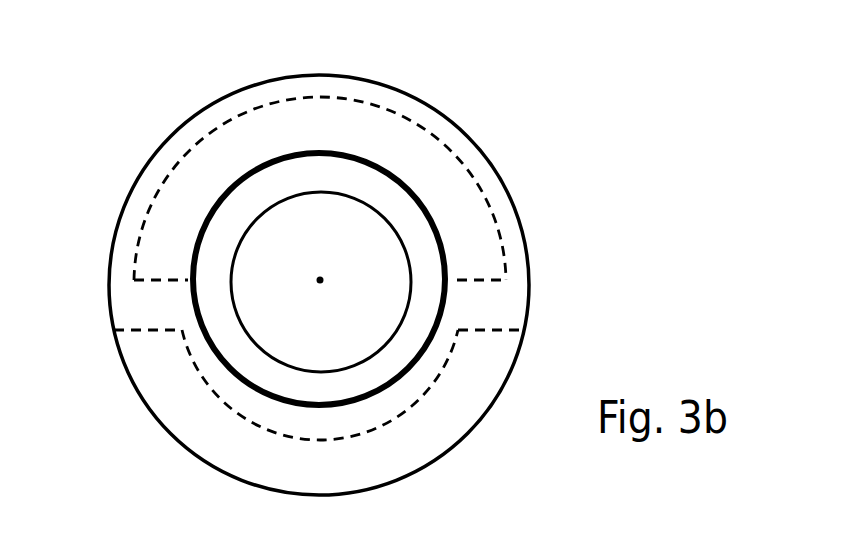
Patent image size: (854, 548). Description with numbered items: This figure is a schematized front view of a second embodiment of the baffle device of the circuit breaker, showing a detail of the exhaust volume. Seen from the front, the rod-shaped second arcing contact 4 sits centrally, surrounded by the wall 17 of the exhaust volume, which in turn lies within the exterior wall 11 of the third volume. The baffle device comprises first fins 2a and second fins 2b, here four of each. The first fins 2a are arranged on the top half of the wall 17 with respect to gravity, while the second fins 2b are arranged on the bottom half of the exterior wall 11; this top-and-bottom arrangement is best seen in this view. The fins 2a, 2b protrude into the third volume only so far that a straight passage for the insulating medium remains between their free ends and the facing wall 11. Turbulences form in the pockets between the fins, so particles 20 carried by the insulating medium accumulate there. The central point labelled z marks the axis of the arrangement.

The exterior wall 11 is at (290, 267).
The first fins 2a is at (305, 142).
The second fins 2b is at (318, 409).
The wall of the exhaust volume 17 is at (319, 210).
The second arcing contact 4 is at (340, 217).
The particles 20 is at (398, 4).
The axis z is at (329, 281).